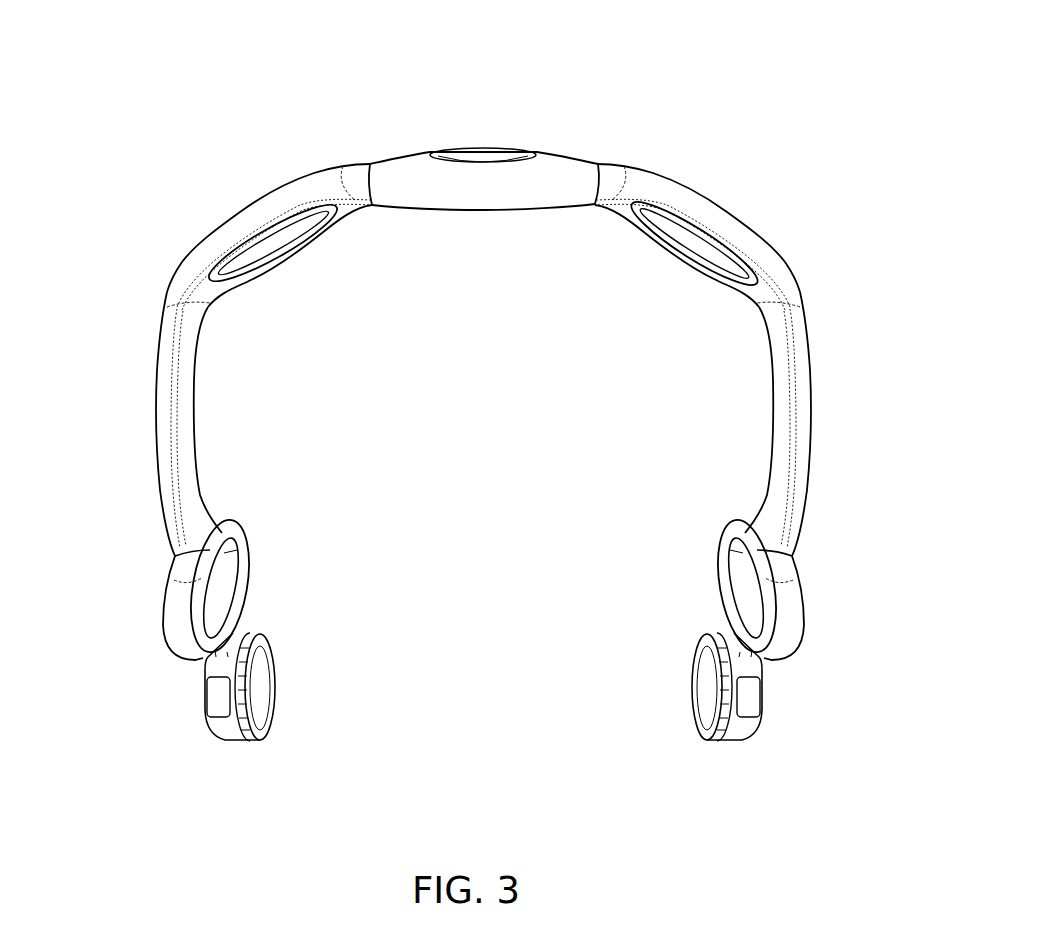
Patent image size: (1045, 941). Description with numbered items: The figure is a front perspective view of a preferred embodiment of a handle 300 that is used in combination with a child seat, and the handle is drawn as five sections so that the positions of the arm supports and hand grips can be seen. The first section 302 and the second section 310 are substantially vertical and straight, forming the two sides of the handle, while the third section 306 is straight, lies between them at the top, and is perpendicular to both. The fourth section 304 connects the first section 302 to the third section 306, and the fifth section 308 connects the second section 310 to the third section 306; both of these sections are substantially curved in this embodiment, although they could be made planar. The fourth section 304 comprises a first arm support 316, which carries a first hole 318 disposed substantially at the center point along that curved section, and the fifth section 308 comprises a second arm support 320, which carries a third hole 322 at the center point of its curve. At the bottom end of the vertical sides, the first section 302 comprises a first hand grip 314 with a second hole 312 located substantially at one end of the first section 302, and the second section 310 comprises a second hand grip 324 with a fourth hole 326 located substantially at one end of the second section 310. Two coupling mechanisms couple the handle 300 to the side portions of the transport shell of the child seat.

The handle 300 is at (793, 35).
The first section 302 is at (140, 300).
The fourth section 304 is at (126, 300).
The third section 306 is at (348, 103).
The fifth section 308 is at (841, 300).
The second section 310 is at (833, 300).
The second hole 312 is at (218, 600).
The first hand grip 314 is at (247, 521).
The first arm support 316 is at (208, 304).
The first hole 318 is at (280, 228).
The second arm support 320 is at (617, 215).
The third hole 322 is at (703, 243).
The second hand grip 324 is at (742, 518).
The fourth hole 326 is at (749, 600).